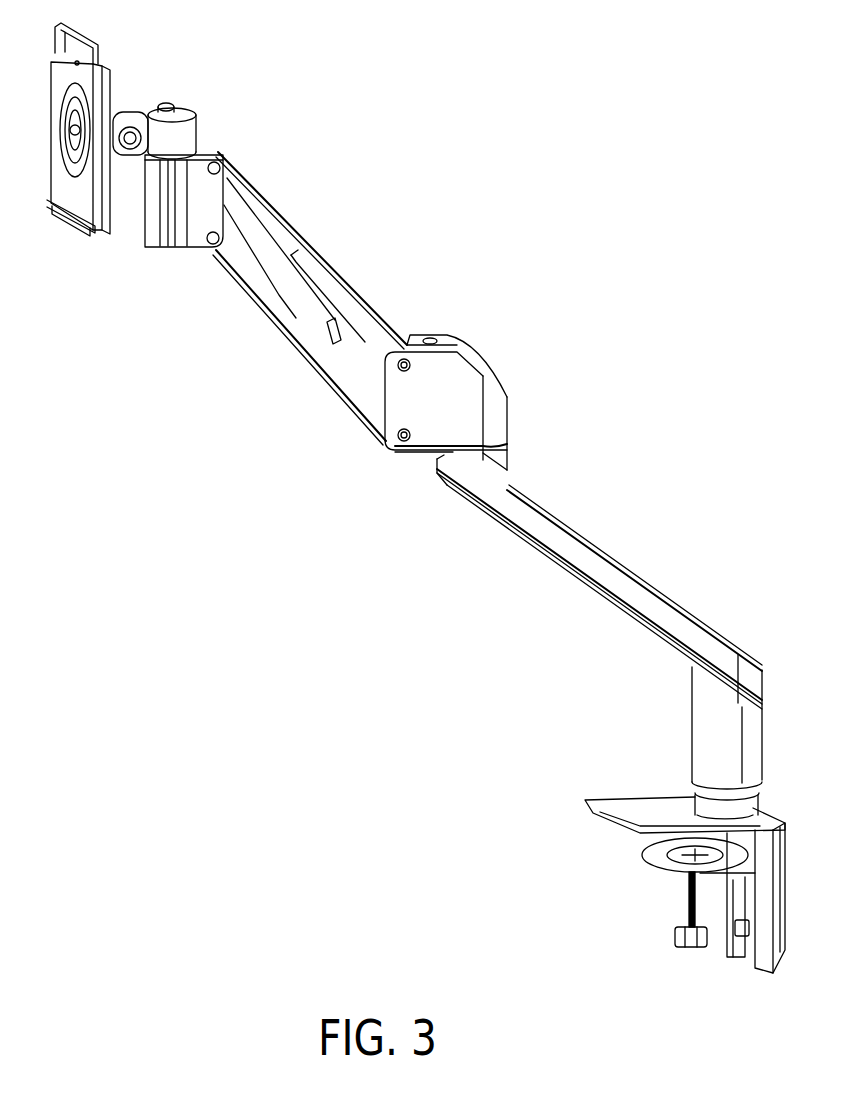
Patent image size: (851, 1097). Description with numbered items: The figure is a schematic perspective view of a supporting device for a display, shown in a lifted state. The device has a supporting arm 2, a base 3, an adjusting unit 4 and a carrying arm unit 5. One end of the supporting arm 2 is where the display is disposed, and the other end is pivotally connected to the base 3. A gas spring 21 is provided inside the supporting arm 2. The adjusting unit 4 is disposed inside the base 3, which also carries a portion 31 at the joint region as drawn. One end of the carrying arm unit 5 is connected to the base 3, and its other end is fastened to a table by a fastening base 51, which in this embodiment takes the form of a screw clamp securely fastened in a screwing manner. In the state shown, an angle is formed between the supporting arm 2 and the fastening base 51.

The supporting arm 2 is at (299, 298).
The gas spring 21 is at (283, 278).
The base 3 is at (466, 425).
The rotating joint of block 31 is at (472, 408).
The adjusting unit 4 is at (423, 428).
The carrying arm unit 5 is at (647, 581).
The fastening base 51 is at (632, 802).